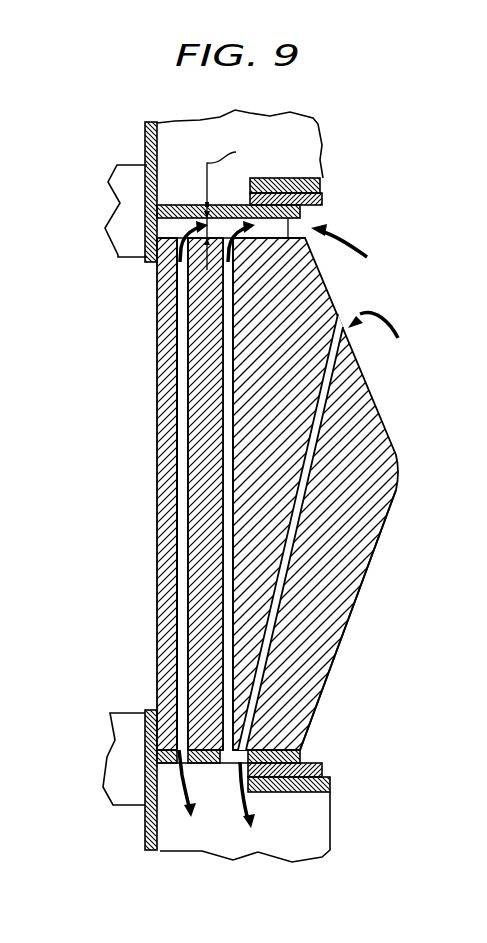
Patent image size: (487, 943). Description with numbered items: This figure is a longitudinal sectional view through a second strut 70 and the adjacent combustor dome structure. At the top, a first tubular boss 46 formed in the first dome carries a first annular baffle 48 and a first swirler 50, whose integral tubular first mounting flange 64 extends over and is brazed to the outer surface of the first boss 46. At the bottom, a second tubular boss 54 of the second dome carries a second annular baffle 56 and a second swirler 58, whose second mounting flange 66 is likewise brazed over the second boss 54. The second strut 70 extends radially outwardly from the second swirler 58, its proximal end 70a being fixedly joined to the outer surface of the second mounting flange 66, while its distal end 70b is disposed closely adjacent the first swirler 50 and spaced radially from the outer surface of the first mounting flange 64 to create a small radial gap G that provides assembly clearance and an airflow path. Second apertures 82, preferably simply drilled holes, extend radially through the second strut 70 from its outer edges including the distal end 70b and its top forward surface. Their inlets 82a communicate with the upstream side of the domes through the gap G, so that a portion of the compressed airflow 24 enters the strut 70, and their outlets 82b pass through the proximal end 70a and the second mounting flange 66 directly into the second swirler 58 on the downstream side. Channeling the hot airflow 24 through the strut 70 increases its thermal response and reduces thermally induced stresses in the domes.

The compressed airflow 24 is at (397, 320).
The first tubular boss 46 is at (323, 197).
The first annular baffle 48 is at (322, 182).
The first swirler 50 is at (100, 208).
The second tubular boss 54 is at (323, 769).
The second annular baffle 56 is at (332, 785).
The second swirler 58 is at (100, 806).
The first mounting flange 64 is at (308, 210).
The second mounting flange 66 is at (303, 756).
The second strut 70 is at (388, 405).
The proximal end of second strut 70a is at (319, 700).
The distal end of second strut 70b is at (277, 202).
The second apertures 82 is at (232, 496).
The inlets of second apertures 82a is at (157, 279).
The outlets of second apertures 82b is at (150, 778).
The radial gap G is at (227, 205).